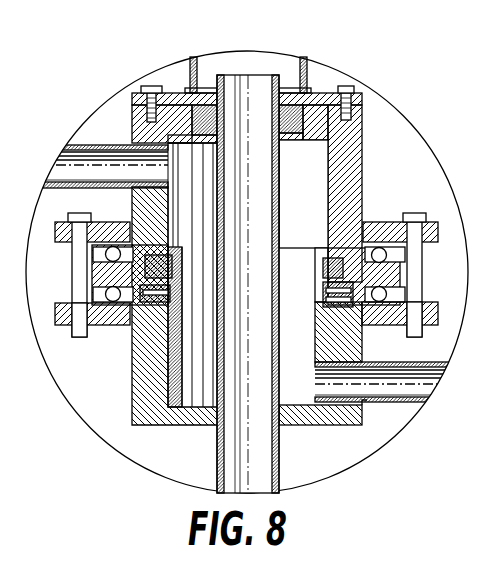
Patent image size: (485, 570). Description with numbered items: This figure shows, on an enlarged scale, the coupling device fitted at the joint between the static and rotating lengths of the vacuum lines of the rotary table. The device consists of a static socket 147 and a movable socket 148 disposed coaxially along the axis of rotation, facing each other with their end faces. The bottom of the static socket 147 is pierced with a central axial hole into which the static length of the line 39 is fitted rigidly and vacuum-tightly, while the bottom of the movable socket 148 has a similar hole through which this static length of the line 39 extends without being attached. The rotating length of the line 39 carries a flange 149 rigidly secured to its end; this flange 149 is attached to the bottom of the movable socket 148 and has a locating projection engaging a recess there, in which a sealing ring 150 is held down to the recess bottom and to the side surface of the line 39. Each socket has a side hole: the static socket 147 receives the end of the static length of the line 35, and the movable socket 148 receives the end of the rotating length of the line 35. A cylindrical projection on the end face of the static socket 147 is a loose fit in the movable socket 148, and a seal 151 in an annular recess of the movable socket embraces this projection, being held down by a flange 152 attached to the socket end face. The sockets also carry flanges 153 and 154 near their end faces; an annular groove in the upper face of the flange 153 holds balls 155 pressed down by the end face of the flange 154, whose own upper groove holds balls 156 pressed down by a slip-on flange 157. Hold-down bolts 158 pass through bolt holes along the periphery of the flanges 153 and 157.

The line 35 is at (67, 151).
The line 39 is at (279, 62).
The static socket 147 is at (177, 424).
The movable socket 148 is at (360, 149).
The flange 149 is at (330, 92).
The sealing ring 150 is at (293, 141).
The seal 151 is at (170, 268).
The flange 152 is at (170, 292).
The flange 153 is at (118, 323).
The flange 154 is at (98, 270).
The balls 155 is at (388, 292).
The balls 156 is at (388, 252).
The slip-on flange 157 is at (383, 222).
The hold-down bolts 158 is at (408, 325).